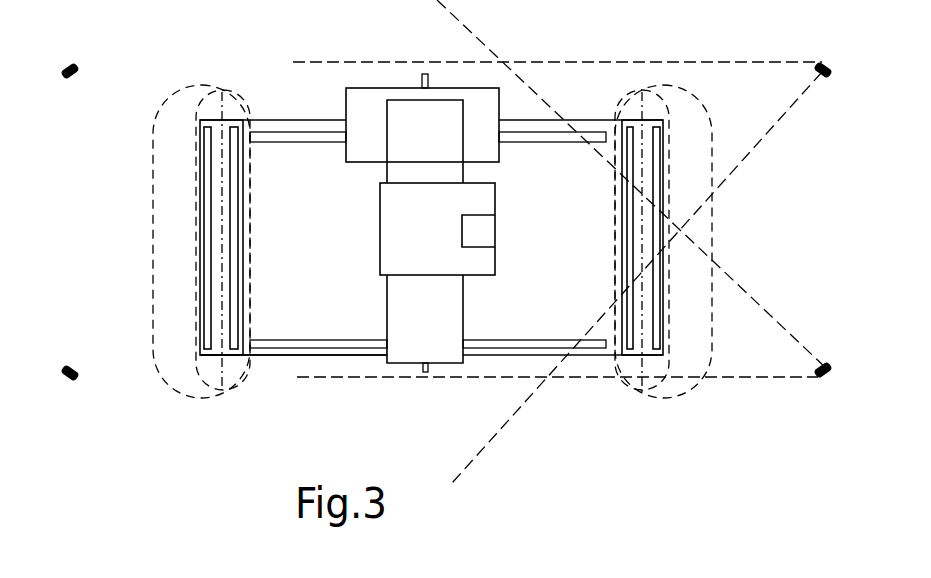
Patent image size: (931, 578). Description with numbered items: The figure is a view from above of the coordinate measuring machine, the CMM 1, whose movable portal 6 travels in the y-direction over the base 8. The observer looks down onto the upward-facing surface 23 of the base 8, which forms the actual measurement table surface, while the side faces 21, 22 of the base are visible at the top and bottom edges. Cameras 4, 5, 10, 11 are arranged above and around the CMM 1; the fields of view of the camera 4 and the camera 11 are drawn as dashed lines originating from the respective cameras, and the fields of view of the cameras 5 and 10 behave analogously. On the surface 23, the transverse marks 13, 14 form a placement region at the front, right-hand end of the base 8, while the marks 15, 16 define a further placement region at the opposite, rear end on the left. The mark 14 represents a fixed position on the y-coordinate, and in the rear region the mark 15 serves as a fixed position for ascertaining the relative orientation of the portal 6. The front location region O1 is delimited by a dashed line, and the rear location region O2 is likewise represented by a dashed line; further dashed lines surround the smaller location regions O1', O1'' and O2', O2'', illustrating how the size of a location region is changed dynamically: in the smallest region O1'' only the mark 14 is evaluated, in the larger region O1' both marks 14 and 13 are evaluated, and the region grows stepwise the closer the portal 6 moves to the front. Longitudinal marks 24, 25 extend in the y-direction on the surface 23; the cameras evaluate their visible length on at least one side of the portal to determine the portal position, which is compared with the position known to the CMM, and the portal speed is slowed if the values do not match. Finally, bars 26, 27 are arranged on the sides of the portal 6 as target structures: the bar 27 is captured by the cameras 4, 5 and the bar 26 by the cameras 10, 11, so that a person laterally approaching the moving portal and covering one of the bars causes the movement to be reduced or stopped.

The CMM 1 is at (280, 86).
The camera 4 is at (815, 381).
The camera 5 is at (71, 383).
The portal 6 is at (439, 350).
The base 8 is at (327, 356).
The camera 10 is at (74, 62).
The camera 11 is at (819, 60).
The transverse mark 13 is at (660, 346).
The transverse mark 14 is at (620, 345).
The transverse mark 15 is at (235, 349).
The target structure 16 is at (203, 338).
The side face 21 is at (668, 176).
The side face 22 is at (198, 229).
The surface 23 is at (350, 297).
The longitudinal mark 24 is at (299, 134).
The longitudinal mark 25 is at (277, 349).
The bar 26 is at (424, 70).
The bar 27 is at (424, 372).
The front location region O1 is at (680, 241).
The location region O1' is at (678, 113).
The smallest location region O1'' is at (647, 208).
The rear location region O2 is at (181, 241).
The location region O2' is at (178, 129).
The location region O2'' is at (208, 219).